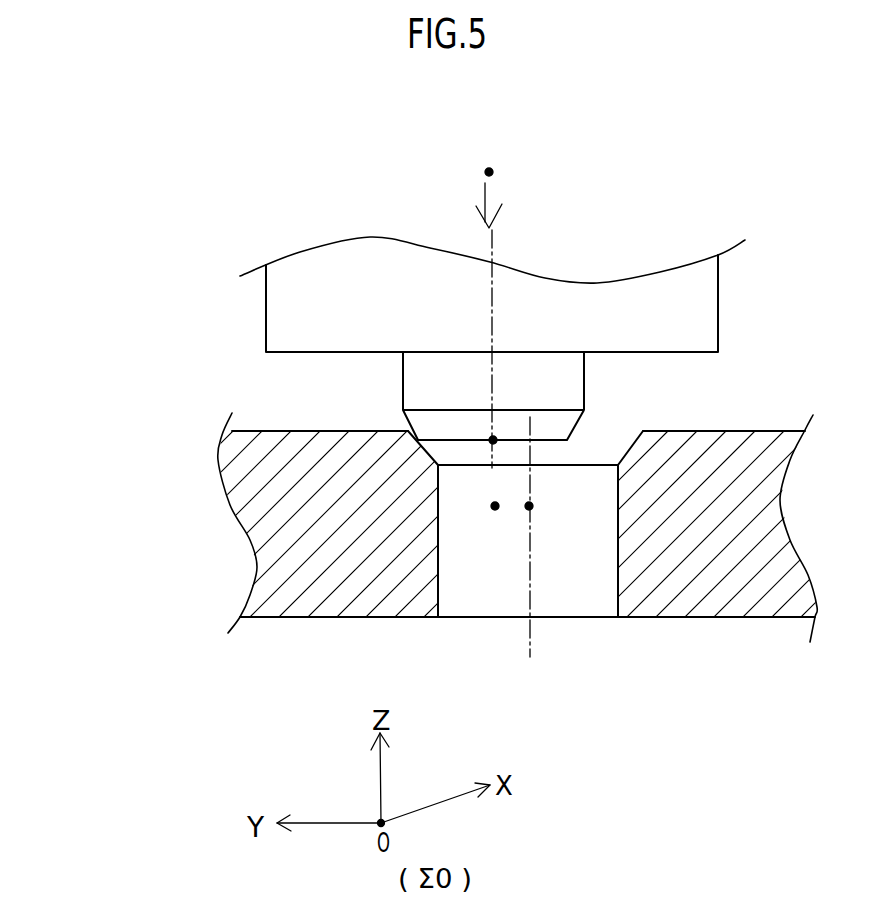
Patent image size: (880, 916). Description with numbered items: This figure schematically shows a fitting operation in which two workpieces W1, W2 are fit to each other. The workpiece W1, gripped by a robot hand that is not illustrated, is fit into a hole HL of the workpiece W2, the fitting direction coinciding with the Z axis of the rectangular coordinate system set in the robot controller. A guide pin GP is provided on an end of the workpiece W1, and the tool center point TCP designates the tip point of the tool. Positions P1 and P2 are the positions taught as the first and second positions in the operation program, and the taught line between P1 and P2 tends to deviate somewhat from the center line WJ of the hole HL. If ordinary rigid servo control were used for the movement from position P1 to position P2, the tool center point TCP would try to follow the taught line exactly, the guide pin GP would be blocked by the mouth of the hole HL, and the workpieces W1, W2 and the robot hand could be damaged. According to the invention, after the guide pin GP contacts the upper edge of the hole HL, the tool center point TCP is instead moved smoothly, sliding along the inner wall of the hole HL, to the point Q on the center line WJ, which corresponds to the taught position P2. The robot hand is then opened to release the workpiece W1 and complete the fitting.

The workpiece W1 is at (170, 326).
The workpiece W2 is at (180, 487).
The guide pin GP is at (560, 385).
The hole HL is at (600, 456).
The tool center point TCP is at (493, 440).
The position P1 is at (499, 181).
The position P2 is at (495, 506).
The point Q is at (529, 506).
The center line WJ is at (528, 638).